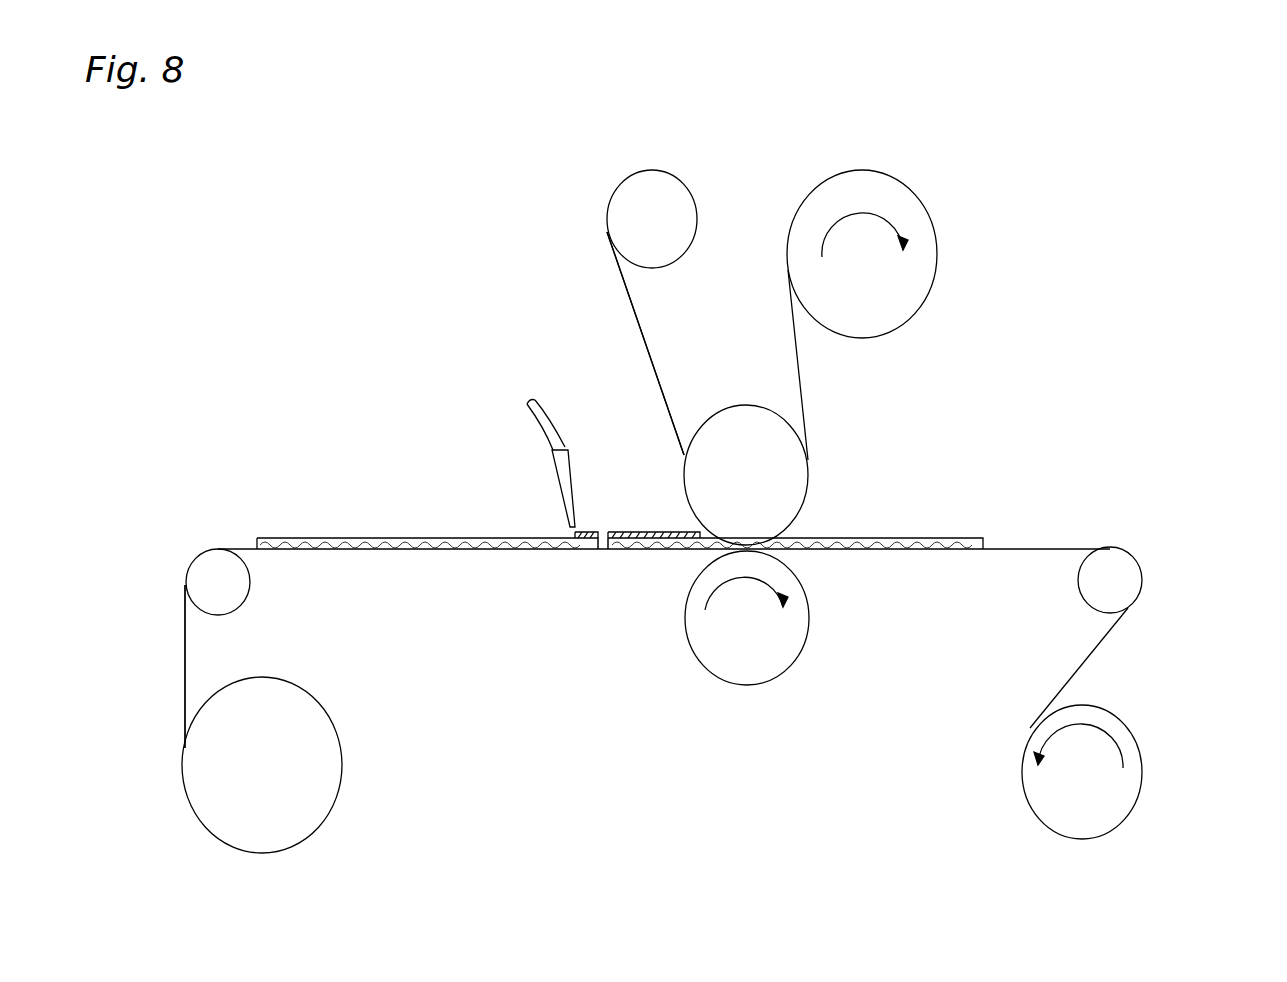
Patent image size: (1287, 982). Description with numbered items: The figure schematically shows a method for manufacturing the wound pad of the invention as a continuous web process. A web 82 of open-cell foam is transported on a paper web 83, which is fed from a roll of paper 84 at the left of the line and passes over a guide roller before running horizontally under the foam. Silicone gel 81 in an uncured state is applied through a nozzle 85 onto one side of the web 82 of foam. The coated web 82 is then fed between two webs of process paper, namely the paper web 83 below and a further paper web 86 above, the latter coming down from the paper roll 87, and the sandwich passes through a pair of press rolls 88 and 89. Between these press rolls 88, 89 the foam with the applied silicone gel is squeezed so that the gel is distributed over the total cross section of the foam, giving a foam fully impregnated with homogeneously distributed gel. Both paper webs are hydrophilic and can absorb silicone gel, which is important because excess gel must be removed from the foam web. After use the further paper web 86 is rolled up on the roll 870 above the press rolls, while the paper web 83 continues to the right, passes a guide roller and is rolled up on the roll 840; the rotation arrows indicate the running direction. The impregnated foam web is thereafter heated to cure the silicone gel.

The silicone gel 81 is at (622, 530).
The web of open-cell foam 82 is at (359, 535).
The paper web 83 is at (185, 652).
The roll of paper 84 is at (272, 853).
The nozzle 85 is at (553, 475).
The further paper web 86 is at (648, 367).
The paper roll 87 is at (646, 170).
The press roll 88 is at (757, 665).
The press roll 89 is at (787, 493).
The roll 840 is at (1142, 792).
The roll 870 is at (940, 222).